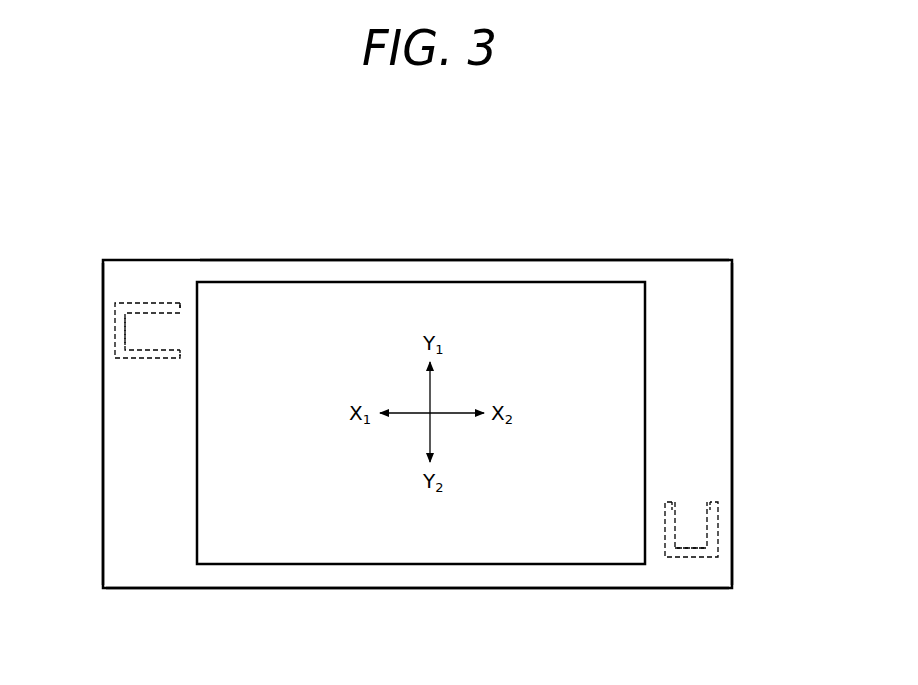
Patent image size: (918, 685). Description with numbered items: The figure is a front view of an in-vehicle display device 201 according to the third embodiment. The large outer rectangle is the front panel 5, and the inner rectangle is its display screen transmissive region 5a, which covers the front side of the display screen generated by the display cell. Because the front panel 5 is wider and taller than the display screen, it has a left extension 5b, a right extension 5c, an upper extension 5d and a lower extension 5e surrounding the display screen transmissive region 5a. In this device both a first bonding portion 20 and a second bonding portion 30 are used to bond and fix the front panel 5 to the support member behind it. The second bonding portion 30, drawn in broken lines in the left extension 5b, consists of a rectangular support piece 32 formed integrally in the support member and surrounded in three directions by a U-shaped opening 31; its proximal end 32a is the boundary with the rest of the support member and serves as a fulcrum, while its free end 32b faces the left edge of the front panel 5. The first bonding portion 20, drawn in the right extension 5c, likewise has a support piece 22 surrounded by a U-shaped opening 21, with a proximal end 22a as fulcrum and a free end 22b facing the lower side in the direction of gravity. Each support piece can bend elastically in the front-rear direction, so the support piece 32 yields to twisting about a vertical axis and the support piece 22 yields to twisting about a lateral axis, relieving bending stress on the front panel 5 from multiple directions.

The display device 201 is at (492, 226).
The front panel 5 is at (322, 257).
The display screen transmissive region 5a is at (538, 549).
The left extension 5b is at (115, 483).
The right extension 5c is at (724, 367).
The upper extension 5d is at (575, 272).
The lower extension 5e is at (335, 575).
The second bonding portion 30 is at (157, 362).
The U-shaped opening 31 is at (122, 302).
The support piece 32 is at (126, 347).
The proximal end 32a is at (180, 308).
The free end 32b is at (135, 326).
The first bonding portion 20 is at (713, 552).
The U-shaped opening 21 is at (719, 531).
The support piece 22 is at (690, 527).
The proximal end 22a is at (668, 502).
The free end 22b is at (700, 555).